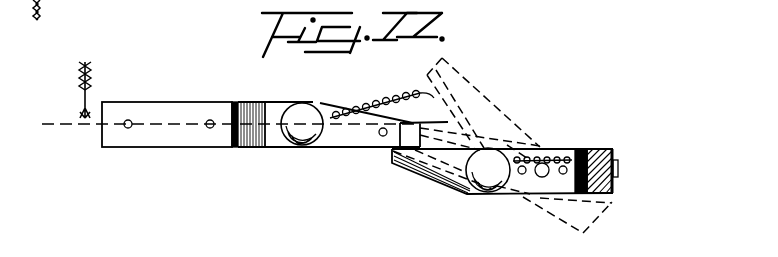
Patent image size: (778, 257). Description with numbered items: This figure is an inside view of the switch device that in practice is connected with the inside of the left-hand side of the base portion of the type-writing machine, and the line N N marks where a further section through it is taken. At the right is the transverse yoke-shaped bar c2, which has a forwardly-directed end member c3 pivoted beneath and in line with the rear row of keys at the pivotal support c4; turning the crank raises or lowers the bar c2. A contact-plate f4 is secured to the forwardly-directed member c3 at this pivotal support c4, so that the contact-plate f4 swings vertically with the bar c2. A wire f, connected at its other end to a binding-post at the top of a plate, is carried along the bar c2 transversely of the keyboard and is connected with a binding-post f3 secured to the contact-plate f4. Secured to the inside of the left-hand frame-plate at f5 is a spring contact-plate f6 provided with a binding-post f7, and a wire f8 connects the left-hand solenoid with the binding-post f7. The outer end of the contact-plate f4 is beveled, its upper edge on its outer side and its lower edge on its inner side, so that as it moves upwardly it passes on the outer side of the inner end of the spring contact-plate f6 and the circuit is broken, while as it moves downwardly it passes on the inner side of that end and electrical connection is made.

The section line N N is at (240, 93).
The securing point f5 is at (182, 127).
The spring contact-plate f6 is at (335, 138).
The binding-post f7 is at (285, 140).
The wire f8 is at (377, 96).
The contact-plate f4 is at (420, 180).
The binding-post f3 is at (487, 196).
The wire f is at (540, 148).
The bar c2 is at (602, 148).
The forwardly-directed end member c3 is at (618, 168).
The pivot c4 is at (542, 177).